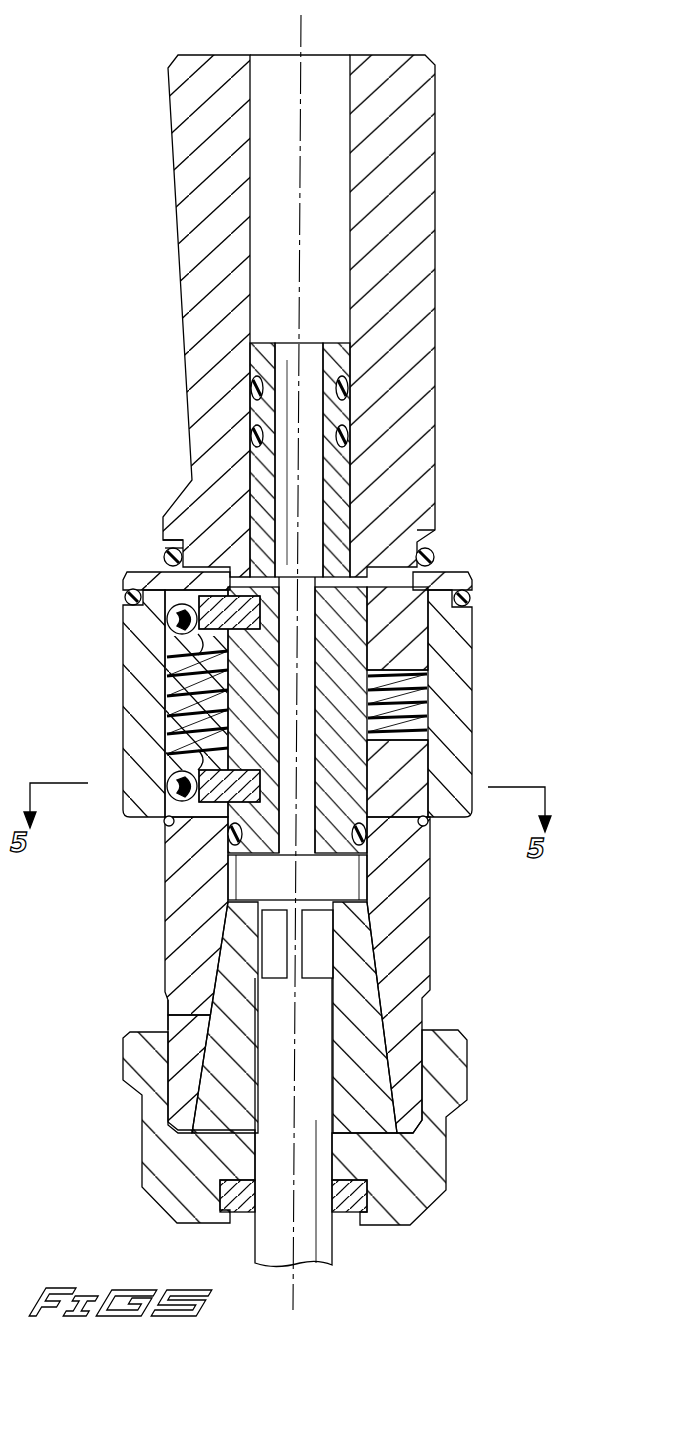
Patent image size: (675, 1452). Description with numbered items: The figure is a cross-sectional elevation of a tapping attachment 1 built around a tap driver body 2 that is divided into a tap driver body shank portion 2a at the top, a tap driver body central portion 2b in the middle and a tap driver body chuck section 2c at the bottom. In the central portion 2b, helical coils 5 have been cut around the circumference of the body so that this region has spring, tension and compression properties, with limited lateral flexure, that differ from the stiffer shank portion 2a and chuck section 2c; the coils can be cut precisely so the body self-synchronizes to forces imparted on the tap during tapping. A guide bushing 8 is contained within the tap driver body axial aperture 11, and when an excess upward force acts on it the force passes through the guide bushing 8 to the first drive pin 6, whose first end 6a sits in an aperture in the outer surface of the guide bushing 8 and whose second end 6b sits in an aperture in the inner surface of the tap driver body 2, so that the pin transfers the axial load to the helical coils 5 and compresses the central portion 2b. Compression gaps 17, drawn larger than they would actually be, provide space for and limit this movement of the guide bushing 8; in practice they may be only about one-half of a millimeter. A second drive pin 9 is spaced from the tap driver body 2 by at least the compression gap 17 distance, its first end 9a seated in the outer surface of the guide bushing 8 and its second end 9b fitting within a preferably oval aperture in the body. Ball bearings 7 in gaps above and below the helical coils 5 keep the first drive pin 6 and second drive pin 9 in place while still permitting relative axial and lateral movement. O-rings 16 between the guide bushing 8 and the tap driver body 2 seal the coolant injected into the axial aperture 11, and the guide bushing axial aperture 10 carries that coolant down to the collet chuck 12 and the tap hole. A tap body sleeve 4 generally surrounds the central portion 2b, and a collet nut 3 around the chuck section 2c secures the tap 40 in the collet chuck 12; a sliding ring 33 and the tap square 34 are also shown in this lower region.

The tapping attachment 1 is at (66, 188).
The tap driver body 2 is at (289, 594).
The tap driver body shank portion 2a is at (197, 168).
The tap driver body central portion 2b is at (180, 758).
The tap driver body chuck section 2c is at (190, 918).
The collet nut 3 is at (450, 1066).
The tap body sleeve 4 is at (140, 683).
The helical coils 5 is at (195, 705).
The first drive pin 6 is at (215, 800).
The first end of first drive pin 6a is at (260, 787).
The second end of first drive pin 6b is at (269, 757).
The ball bearings 7 is at (167, 620).
The guide bushing 8 is at (262, 475).
The second drive pin 9 is at (165, 565).
The first end of second drive pin 9a is at (260, 614).
The second end of second drive pin 9b is at (165, 657).
The guide bushing axial aperture 10 is at (302, 40).
The tap driver body axial aperture 11 is at (338, 172).
The collet chuck 12 is at (365, 1022).
The O-rings 16 is at (258, 436).
The compression gaps 17 is at (233, 563).
The sliding ring 33 is at (240, 1205).
The tap square 34 is at (292, 1013).
The tap 40 is at (305, 1258).